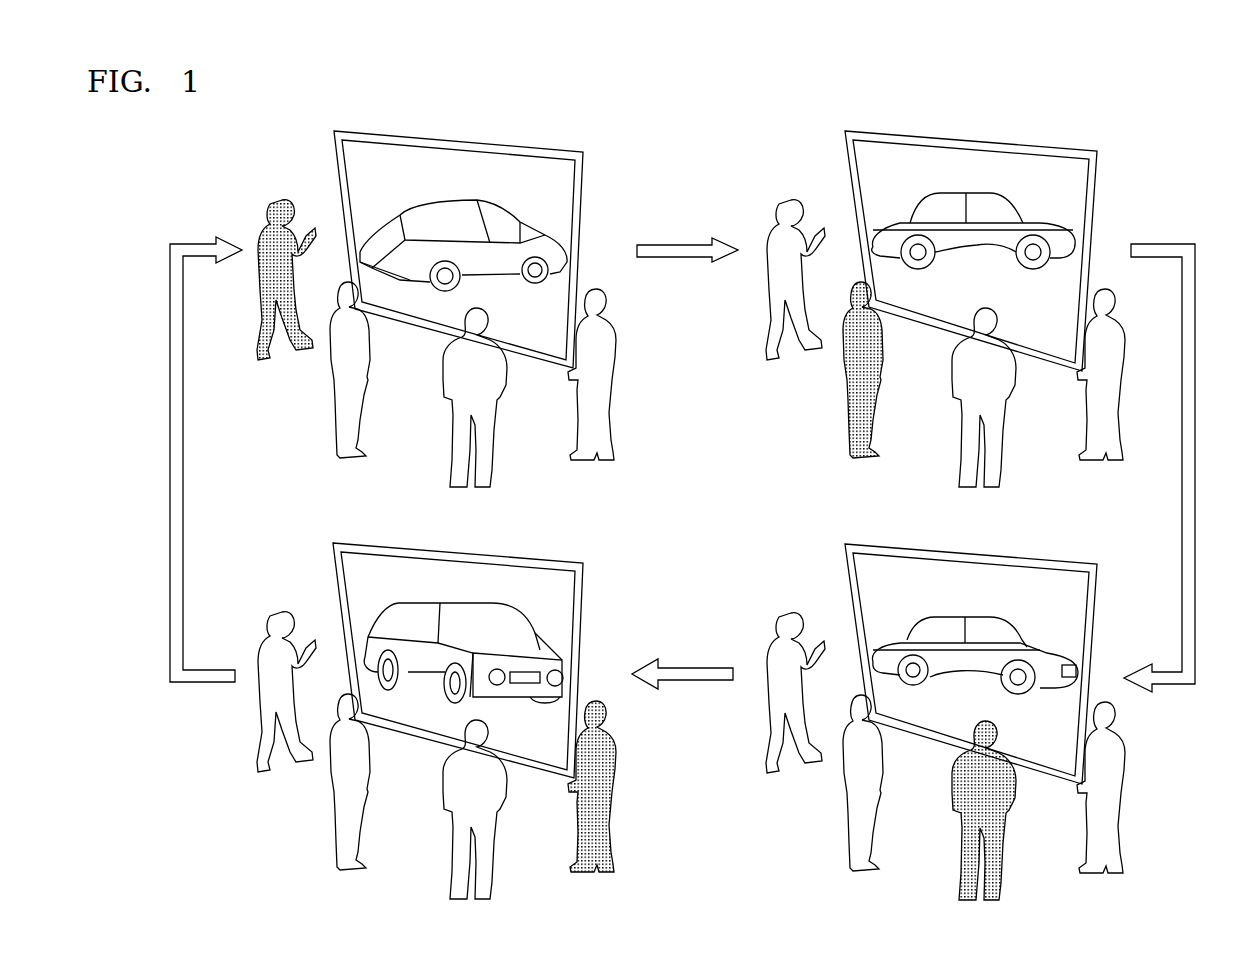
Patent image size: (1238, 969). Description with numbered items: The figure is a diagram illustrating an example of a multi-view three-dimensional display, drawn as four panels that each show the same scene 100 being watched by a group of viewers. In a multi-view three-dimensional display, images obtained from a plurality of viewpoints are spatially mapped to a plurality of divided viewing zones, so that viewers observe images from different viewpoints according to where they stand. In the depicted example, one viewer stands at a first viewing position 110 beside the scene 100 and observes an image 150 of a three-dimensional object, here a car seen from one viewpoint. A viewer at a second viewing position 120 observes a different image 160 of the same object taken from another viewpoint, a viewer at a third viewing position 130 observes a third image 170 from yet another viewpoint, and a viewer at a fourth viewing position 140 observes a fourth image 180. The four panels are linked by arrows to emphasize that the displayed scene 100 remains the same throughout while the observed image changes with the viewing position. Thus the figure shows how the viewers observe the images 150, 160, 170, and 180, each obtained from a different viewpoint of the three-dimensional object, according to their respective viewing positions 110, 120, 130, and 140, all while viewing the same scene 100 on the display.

The scene 100 is at (385, 135).
The viewing position 110 is at (271, 361).
The viewing position 120 is at (852, 431).
The viewing position 130 is at (595, 845).
The viewing position 140 is at (960, 884).
The image 150 is at (537, 228).
The image 160 is at (1043, 227).
The image 170 is at (542, 652).
The image 180 is at (1043, 654).